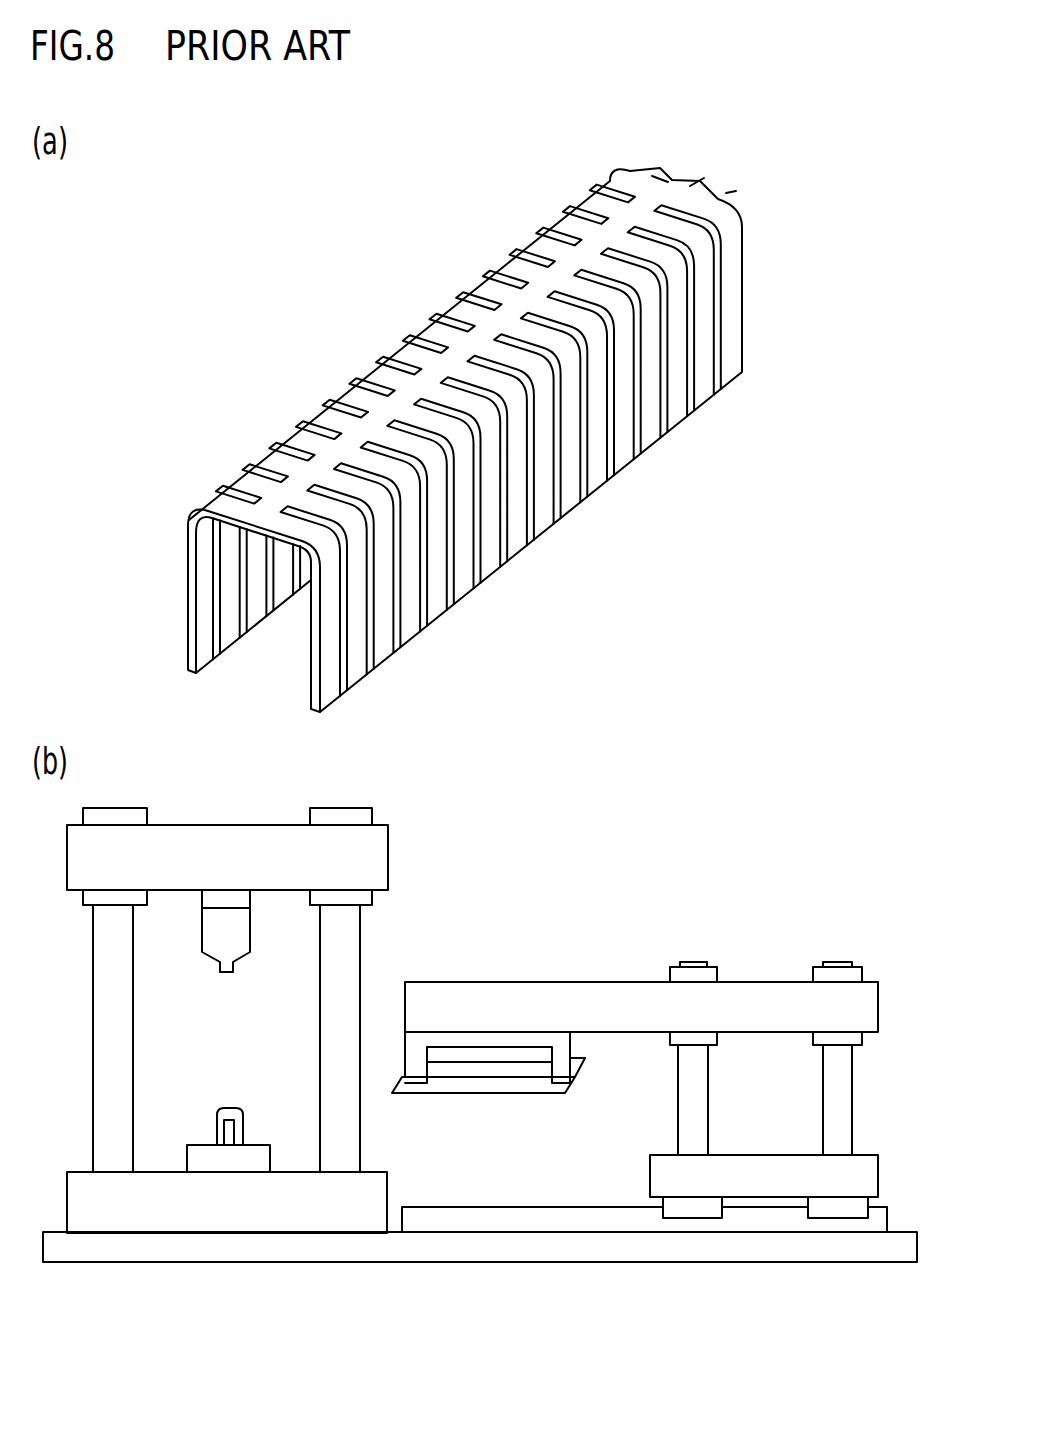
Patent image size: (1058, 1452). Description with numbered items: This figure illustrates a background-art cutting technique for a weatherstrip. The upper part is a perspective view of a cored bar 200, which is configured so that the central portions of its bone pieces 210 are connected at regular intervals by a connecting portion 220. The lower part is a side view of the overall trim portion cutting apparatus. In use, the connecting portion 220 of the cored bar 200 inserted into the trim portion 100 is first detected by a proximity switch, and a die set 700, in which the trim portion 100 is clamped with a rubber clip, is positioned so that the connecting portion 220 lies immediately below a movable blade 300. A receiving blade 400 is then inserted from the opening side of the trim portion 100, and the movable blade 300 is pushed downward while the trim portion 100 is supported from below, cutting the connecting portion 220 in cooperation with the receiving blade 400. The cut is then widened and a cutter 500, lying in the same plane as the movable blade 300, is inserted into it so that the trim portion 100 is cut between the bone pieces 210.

The cored bar 200 is at (474, 437).
The bone pieces 210 is at (543, 505).
The connecting portion 220 is at (412, 387).
The die set 700 is at (388, 857).
The movable blade 300 is at (250, 935).
The receiving blade 400 is at (223, 1130).
The trim portion 100 is at (255, 1120).
The cutter 500 is at (494, 1095).